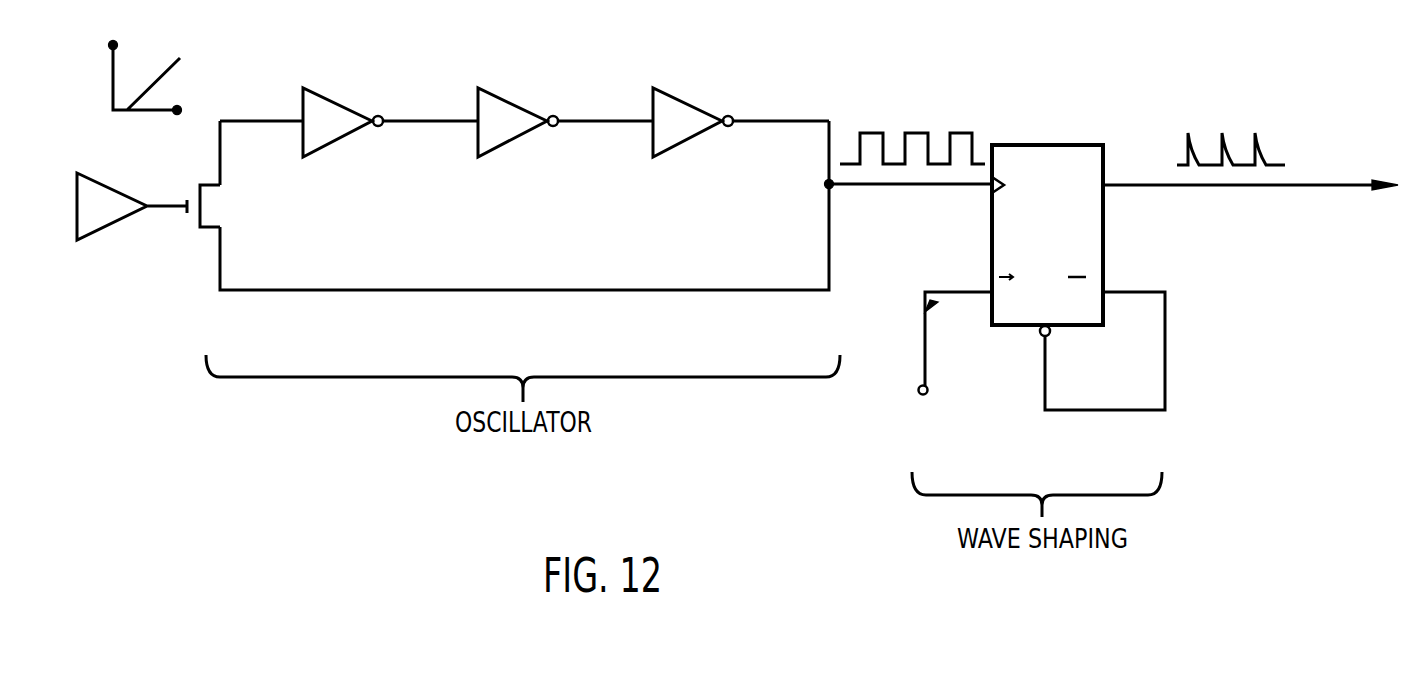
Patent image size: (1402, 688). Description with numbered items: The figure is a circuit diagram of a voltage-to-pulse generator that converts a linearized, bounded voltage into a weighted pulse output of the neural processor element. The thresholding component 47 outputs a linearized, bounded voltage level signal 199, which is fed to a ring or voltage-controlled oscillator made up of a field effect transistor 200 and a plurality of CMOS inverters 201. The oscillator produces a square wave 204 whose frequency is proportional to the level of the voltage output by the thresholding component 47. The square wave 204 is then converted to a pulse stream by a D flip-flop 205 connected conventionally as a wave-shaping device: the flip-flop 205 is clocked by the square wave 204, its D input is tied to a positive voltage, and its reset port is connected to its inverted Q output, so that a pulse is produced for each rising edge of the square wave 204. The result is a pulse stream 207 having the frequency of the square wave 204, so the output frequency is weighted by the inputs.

The voltage level signal 199 is at (110, 77).
The thresholding component 47 is at (95, 232).
The field effect transistor 200 is at (212, 225).
The CMOS inverters 201 is at (327, 97).
The square wave 204 is at (910, 132).
The flip-flop 205 is at (1025, 143).
The pulse stream 207 is at (1262, 143).